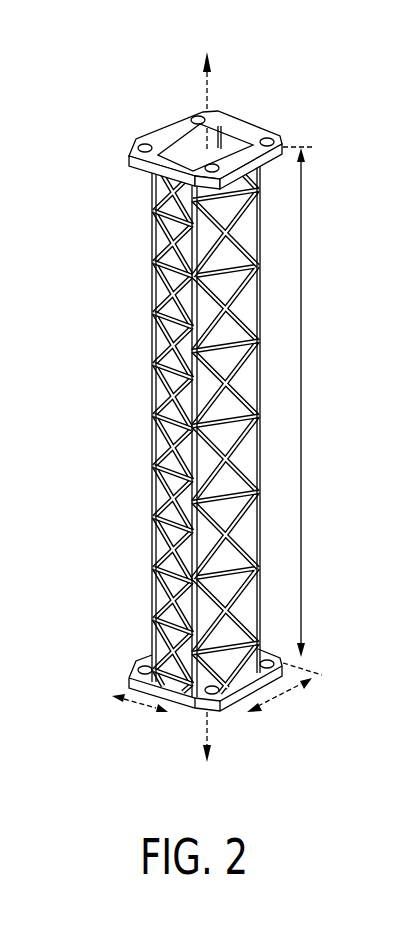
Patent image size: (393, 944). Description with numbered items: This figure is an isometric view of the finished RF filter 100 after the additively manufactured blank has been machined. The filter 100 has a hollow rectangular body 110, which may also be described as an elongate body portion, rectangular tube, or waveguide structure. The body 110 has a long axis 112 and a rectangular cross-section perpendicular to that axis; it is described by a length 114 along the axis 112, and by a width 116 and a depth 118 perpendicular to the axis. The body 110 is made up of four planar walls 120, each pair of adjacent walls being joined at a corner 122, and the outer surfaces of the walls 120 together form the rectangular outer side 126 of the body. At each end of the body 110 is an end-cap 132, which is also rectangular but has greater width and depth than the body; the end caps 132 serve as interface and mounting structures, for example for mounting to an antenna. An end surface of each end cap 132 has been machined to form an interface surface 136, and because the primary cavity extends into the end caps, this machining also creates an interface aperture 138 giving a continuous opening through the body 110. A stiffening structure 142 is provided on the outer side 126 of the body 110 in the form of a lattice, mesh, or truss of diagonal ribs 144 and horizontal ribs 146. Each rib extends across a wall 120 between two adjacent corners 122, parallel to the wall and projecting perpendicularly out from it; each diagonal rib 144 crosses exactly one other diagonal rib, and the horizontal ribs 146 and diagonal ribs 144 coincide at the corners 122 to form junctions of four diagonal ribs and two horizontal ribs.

The RF filter 100 is at (136, 114).
The hollow rectangular body 110 is at (162, 313).
The long axis 112 is at (212, 82).
The length 114 is at (303, 463).
The width 116 is at (285, 693).
The depth 118 is at (118, 707).
The planar walls 120 is at (247, 372).
The corner 122 is at (190, 333).
The outer side 126 is at (162, 543).
The end-cap 132 is at (155, 168).
The interface surface 136 is at (250, 146).
The interface aperture 138 is at (173, 155).
The stiffening structure 142 is at (258, 557).
The diagonal ribs 144 is at (250, 303).
The horizontal ribs 146 is at (153, 487).